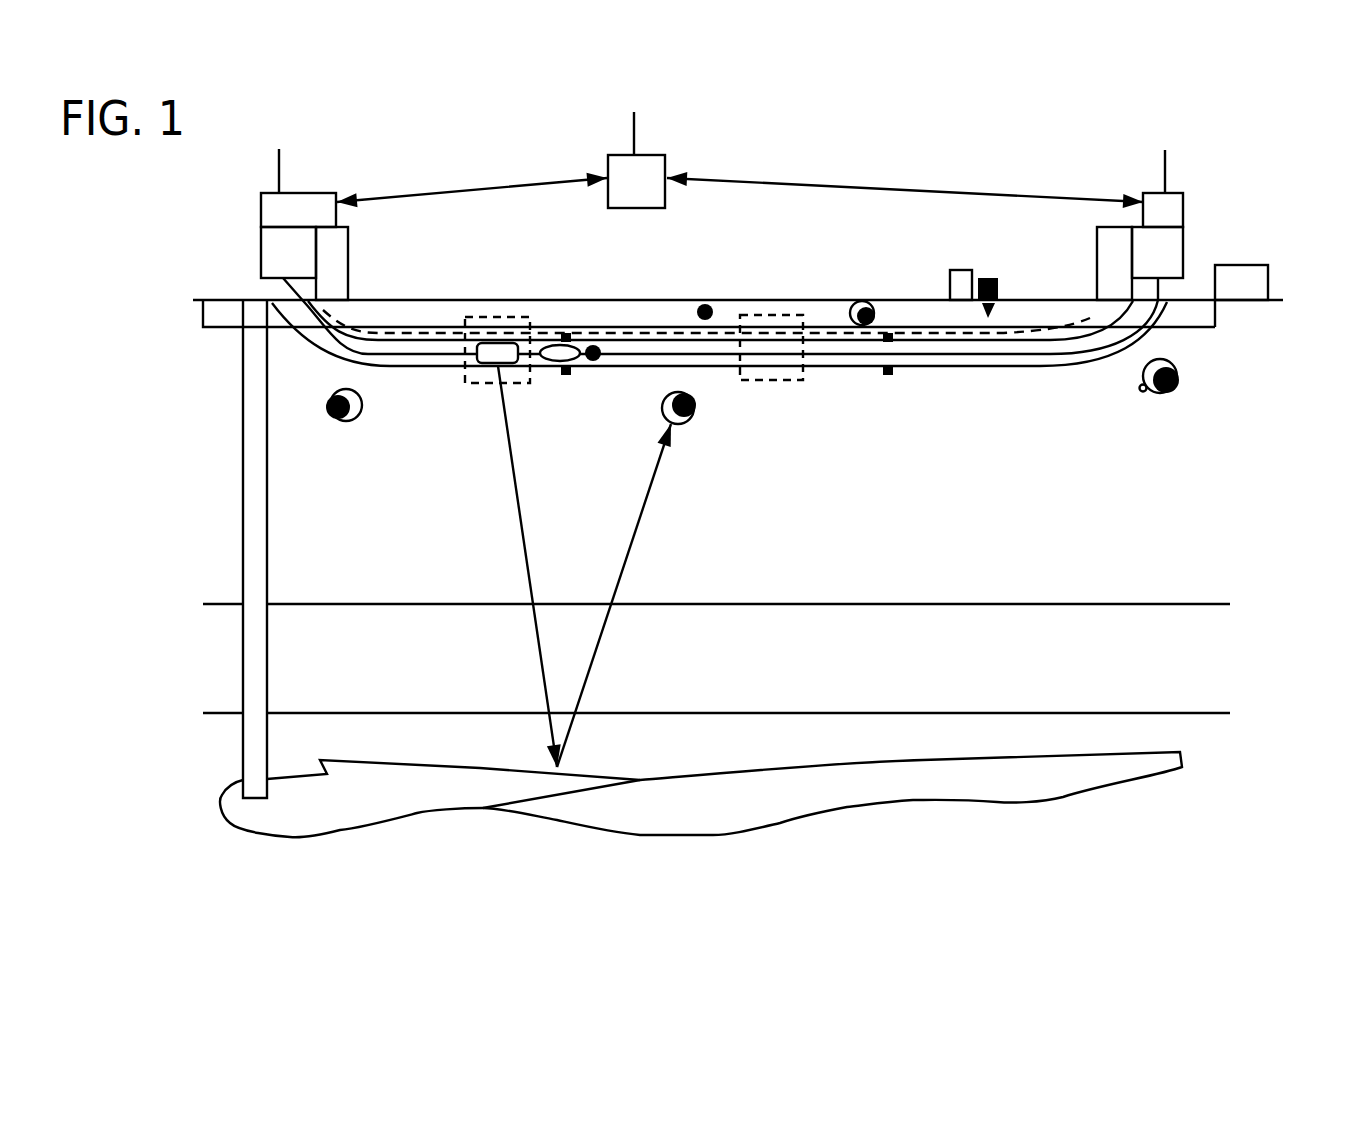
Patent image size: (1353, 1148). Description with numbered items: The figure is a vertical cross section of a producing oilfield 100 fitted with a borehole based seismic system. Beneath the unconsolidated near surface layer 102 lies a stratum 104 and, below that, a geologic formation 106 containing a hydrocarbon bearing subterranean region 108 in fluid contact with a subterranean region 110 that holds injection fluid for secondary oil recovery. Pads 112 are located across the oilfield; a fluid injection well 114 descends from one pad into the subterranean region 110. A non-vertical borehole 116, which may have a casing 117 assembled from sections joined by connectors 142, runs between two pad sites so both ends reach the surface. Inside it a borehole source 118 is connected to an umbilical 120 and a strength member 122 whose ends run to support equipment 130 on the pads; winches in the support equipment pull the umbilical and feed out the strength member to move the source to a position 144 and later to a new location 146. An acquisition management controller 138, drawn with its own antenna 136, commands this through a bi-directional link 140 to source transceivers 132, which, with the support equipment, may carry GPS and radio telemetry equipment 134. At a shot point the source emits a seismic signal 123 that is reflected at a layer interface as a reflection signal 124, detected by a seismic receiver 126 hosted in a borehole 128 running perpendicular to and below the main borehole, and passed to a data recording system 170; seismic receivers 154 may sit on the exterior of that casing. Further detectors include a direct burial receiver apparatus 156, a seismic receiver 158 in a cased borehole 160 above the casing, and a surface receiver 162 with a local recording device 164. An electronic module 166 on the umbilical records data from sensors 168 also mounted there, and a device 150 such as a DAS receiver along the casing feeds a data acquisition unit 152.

The producing oilfield 100 is at (689, 900).
The near surface layer 102 is at (1141, 553).
The stratum 104 is at (1170, 672).
The geologic formation 106 is at (1192, 820).
The hydrocarbon bearing subterranean region 108 is at (978, 795).
The subterranean region 110 is at (398, 808).
The pad 112 is at (200, 312).
The fluid injection well 114 is at (243, 493).
The borehole 116 is at (719, 384).
The casing 117 is at (953, 367).
The borehole source 118 is at (493, 343).
The umbilical 120 is at (652, 350).
The strength member 122 is at (407, 353).
The seismic signal 123 is at (514, 483).
The reflection signal 124 is at (647, 500).
The seismic receiver 126 is at (337, 421).
The borehole 128 is at (350, 396).
The support equipment 130 is at (262, 256).
The source transceiver 132 is at (262, 210).
The radio telemetry equipment 134 is at (283, 163).
The antenna 136 is at (633, 125).
The acquisition management controller 138 is at (650, 170).
The bi-directional link 140 is at (473, 190).
The connector 142 is at (567, 375).
The position 144 is at (475, 385).
The new location 146 is at (790, 380).
The device 150 is at (377, 337).
The data acquisition unit 152 is at (345, 257).
The seismic receiver 154 is at (1141, 392).
The receiver apparatus 156 is at (705, 304).
The seismic receiver 158 is at (853, 305).
The cased borehole 160 is at (870, 305).
The surface receiver 162 is at (990, 278).
The local recording device 164 is at (960, 270).
The electronic module 166 is at (553, 357).
The sensor 168 is at (592, 345).
The data recording system 170 is at (1268, 280).